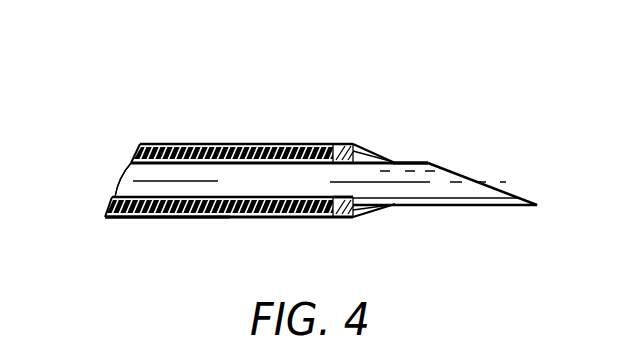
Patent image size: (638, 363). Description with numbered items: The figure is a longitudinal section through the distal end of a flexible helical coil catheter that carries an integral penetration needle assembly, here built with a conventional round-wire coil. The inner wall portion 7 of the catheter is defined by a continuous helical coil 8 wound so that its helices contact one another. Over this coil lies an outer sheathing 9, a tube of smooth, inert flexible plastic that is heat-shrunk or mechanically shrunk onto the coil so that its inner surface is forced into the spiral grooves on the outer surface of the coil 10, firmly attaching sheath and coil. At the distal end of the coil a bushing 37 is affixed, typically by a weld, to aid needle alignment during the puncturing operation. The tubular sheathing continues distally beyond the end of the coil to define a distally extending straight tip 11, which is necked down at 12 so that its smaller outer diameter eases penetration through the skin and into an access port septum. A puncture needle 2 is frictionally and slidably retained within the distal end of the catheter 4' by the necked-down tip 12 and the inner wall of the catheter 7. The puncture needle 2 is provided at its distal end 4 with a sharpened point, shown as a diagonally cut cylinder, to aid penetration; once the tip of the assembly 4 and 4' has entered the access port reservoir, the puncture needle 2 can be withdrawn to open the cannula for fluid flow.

The puncture needle 2 is at (310, 182).
The distal end of the puncture needle 4 is at (445, 163).
The distal end of the catheter 4' is at (421, 131).
The inner wall portion 7 is at (137, 200).
The continuous helical coil 8 is at (172, 144).
The outer sheathing 9 is at (225, 217).
The outer surface of the coil 10 is at (123, 217).
The distally extending straight tip 11 is at (388, 137).
The necked-down tip 12 is at (395, 227).
The bushing 37 is at (333, 145).